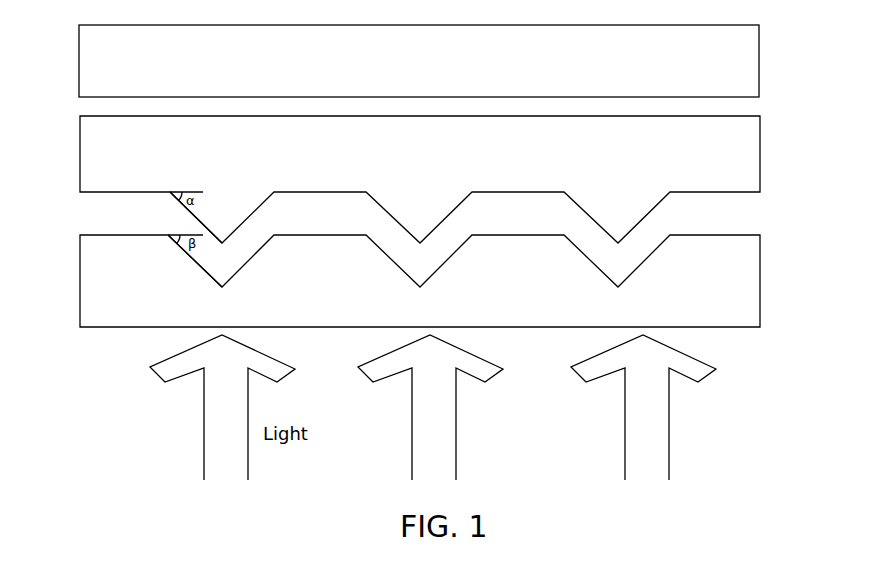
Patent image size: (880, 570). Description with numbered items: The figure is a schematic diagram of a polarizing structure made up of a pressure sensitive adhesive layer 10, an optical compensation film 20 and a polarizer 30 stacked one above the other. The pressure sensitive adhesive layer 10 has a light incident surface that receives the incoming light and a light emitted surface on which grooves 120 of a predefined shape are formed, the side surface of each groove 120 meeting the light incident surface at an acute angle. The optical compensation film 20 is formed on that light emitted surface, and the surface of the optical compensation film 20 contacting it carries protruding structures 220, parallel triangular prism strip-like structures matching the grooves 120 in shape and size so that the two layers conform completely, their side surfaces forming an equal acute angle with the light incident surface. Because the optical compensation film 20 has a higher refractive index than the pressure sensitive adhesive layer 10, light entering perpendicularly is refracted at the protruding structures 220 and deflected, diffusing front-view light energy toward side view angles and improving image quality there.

The pressure sensitive adhesive layer 10 is at (760, 280).
The optical compensation film 20 is at (760, 152).
The polarizer 30 is at (759, 60).
The groove 120 is at (187, 268).
The protruding structure 220 is at (172, 207).